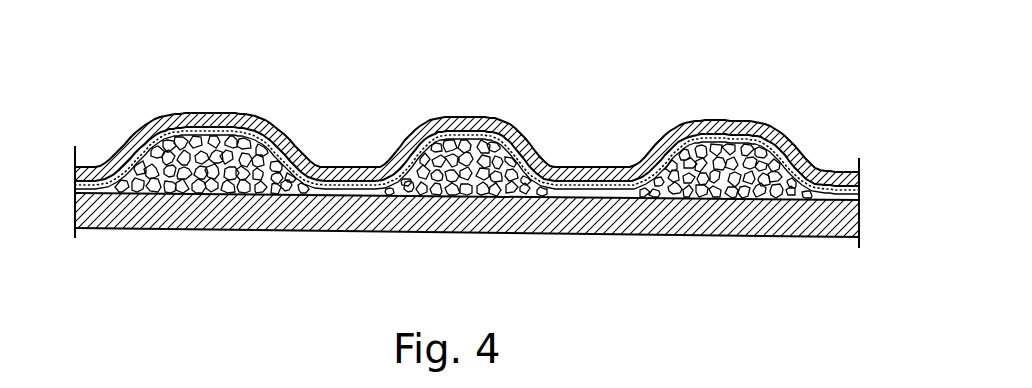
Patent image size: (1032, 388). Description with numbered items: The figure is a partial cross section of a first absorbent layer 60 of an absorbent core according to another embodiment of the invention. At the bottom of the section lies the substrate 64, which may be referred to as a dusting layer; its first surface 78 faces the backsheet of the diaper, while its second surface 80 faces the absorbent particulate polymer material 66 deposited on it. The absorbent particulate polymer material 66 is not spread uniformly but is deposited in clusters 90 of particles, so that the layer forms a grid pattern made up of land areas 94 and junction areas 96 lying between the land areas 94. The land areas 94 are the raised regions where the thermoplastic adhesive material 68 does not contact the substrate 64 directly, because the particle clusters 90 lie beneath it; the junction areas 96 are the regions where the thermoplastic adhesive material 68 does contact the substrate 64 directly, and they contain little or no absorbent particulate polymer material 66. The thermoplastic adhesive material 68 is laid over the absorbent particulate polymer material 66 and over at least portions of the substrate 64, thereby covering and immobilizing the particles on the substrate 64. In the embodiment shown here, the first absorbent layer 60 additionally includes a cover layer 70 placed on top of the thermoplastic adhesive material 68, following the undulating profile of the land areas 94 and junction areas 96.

The first absorbent layer 60 is at (603, 87).
The substrate 64 is at (243, 223).
The absorbent particulate polymer material 66 is at (227, 155).
The thermoplastic adhesive material 68 is at (397, 145).
The cover layer 70 is at (460, 118).
The first surface 78 is at (625, 228).
The second surface 80 is at (560, 160).
The clusters 90 is at (750, 155).
The land areas 94 is at (500, 120).
The junction areas 96 is at (343, 163).